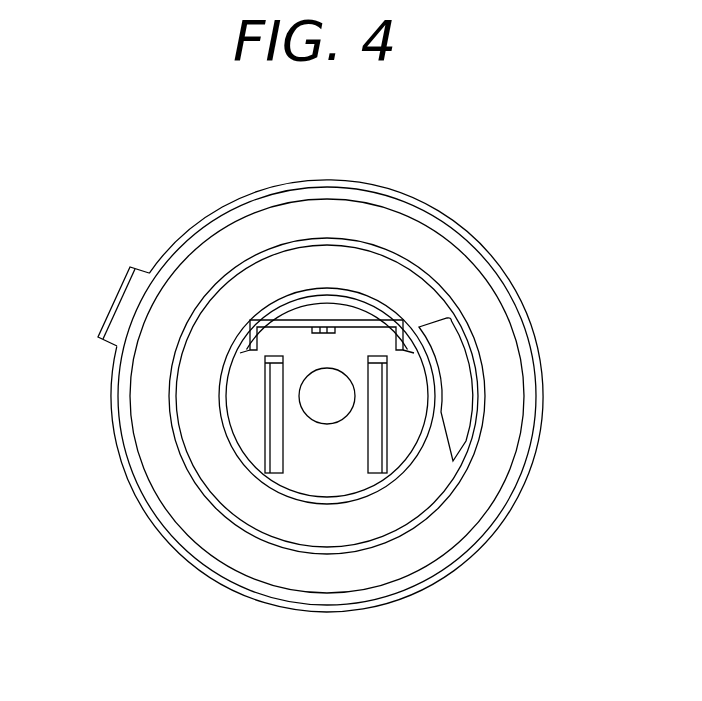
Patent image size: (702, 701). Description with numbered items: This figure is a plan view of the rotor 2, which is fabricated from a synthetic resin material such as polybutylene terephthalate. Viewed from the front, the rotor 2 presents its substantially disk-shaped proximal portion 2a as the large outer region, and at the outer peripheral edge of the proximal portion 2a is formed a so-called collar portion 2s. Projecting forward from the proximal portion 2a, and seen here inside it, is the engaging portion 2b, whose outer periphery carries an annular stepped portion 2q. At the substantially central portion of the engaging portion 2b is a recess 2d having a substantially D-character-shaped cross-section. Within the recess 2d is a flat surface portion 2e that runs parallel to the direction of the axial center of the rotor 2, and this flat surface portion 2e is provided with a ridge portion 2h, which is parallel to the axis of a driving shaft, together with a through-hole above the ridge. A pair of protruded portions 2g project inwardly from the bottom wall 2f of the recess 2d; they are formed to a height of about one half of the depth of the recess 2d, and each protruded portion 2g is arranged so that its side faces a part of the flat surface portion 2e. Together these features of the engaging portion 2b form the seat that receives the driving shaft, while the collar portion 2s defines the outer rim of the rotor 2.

The rotor 2 is at (217, 198).
The proximal portion 2a is at (508, 276).
The engaging portion 2b is at (247, 473).
The recess 2d is at (338, 457).
The flat surface portion 2e is at (355, 327).
The bottom wall 2f is at (307, 453).
The protruded portions 2g is at (270, 400).
The ridge portion 2h is at (313, 329).
The annular stepped portion 2q is at (203, 333).
The collar portion 2s is at (440, 528).